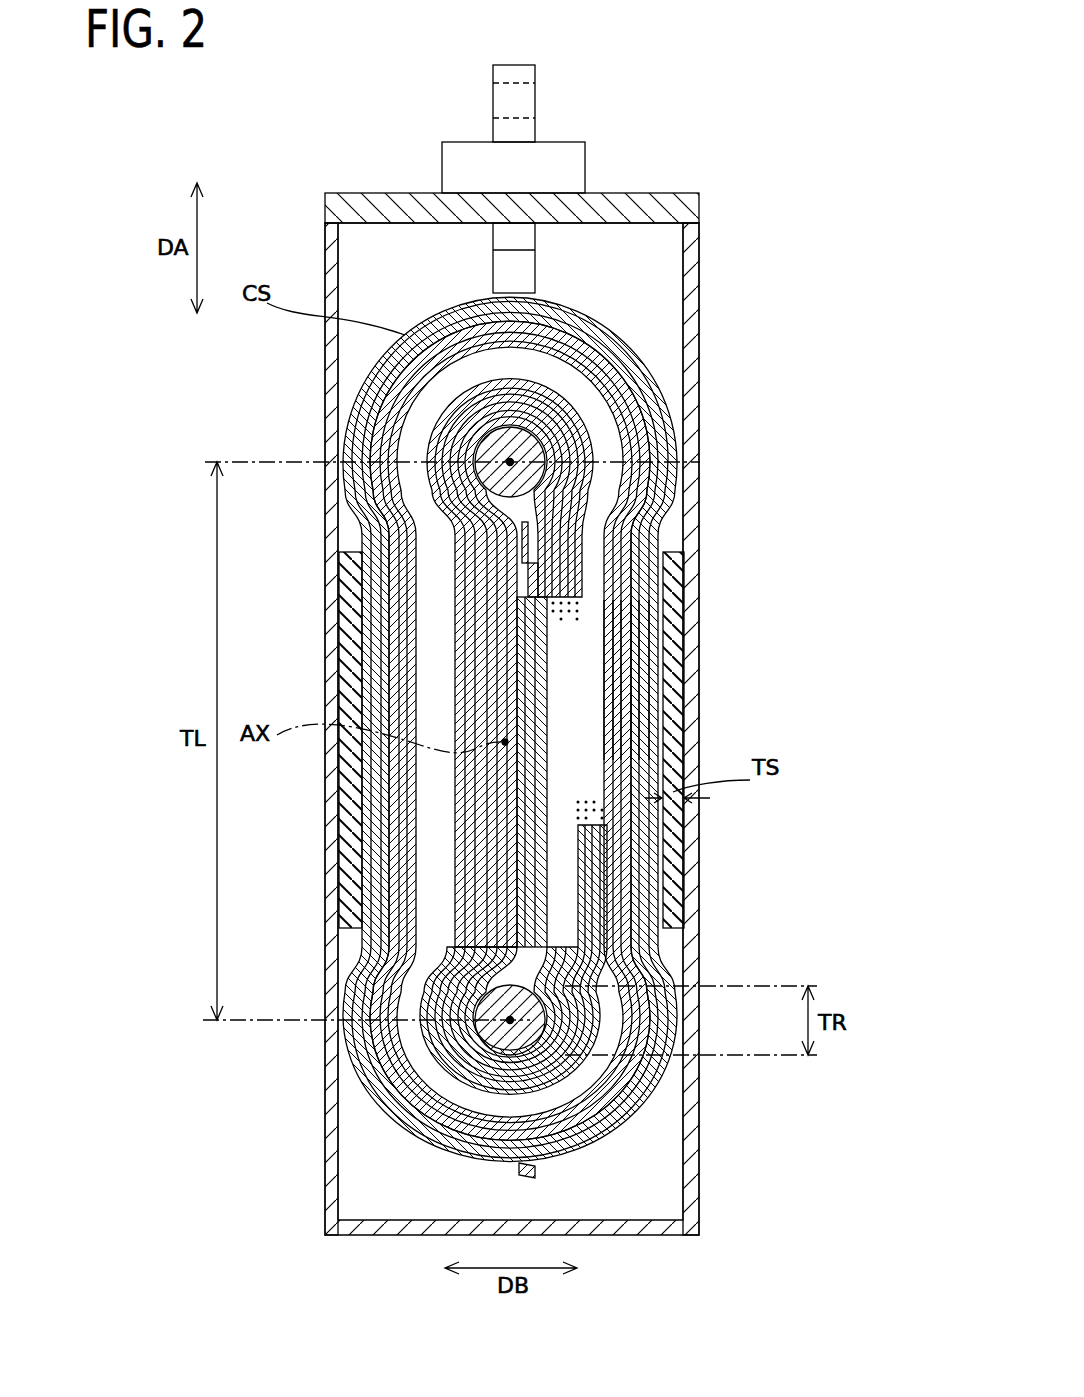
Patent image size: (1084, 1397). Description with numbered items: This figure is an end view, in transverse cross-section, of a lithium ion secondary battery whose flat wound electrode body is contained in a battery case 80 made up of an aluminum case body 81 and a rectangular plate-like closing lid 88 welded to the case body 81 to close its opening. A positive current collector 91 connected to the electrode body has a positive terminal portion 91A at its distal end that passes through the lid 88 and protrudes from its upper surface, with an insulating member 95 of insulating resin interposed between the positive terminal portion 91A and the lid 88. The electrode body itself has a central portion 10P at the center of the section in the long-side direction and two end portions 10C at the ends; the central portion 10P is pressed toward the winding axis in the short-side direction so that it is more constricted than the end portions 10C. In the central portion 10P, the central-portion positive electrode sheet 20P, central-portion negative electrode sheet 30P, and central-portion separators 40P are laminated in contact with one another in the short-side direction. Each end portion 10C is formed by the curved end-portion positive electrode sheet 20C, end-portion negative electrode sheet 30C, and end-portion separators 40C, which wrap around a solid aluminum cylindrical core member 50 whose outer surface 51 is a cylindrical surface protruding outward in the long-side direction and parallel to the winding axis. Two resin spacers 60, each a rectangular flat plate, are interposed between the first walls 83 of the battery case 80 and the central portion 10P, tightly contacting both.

The end portion 10C is at (564, 789).
The central portion 10P is at (735, 680).
The end-portion positive electrode sheet 20C is at (653, 470).
The end-portion negative electrode sheet 30C is at (672, 510).
The end-portion separators 40C is at (642, 488).
The central-portion positive electrode sheet 20P is at (632, 665).
The central-portion negative electrode sheet 30P is at (615, 737).
The central-portion separators 40P is at (625, 690).
The core member 50 is at (532, 452).
The outer surface 51 is at (515, 428).
The spacer 60 is at (347, 640).
The battery case 80 is at (576, 708).
The case body 81 is at (698, 250).
The first wall 83 is at (327, 813).
The closing lid 88 is at (700, 203).
The positive current collector 91 is at (527, 268).
The positive terminal portion 91A is at (532, 72).
The insulating member 95 is at (457, 145).